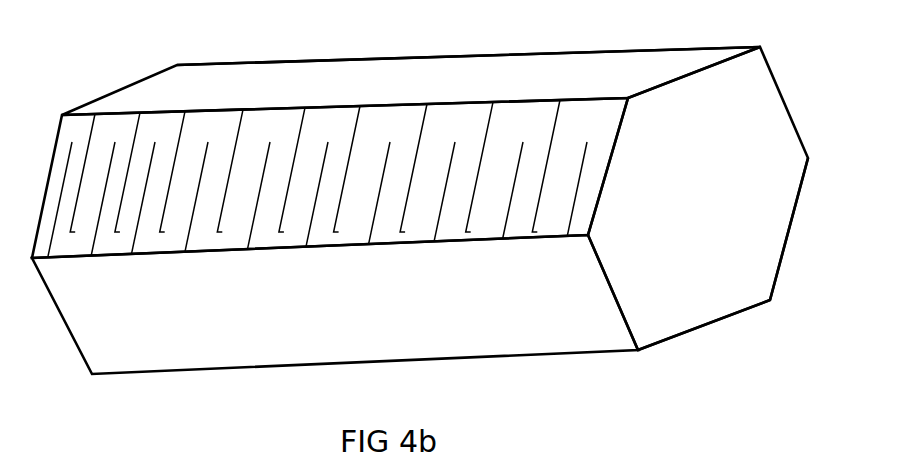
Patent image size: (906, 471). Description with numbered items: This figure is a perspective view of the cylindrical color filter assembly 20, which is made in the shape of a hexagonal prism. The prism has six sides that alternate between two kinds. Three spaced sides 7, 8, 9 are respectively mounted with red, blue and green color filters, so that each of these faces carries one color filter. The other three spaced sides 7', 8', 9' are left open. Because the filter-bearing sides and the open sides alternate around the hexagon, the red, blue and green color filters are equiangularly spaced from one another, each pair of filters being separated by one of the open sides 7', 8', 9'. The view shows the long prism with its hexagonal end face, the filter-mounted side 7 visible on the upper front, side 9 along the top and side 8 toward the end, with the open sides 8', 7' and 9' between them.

The cylindrical color filter assembly 20 is at (277, 60).
The side 7 is at (330, 133).
The side 9 is at (468, 34).
The side 8 is at (699, 180).
The open side 7' is at (806, 229).
The open side 9' is at (704, 336).
The open side 8' is at (335, 308).